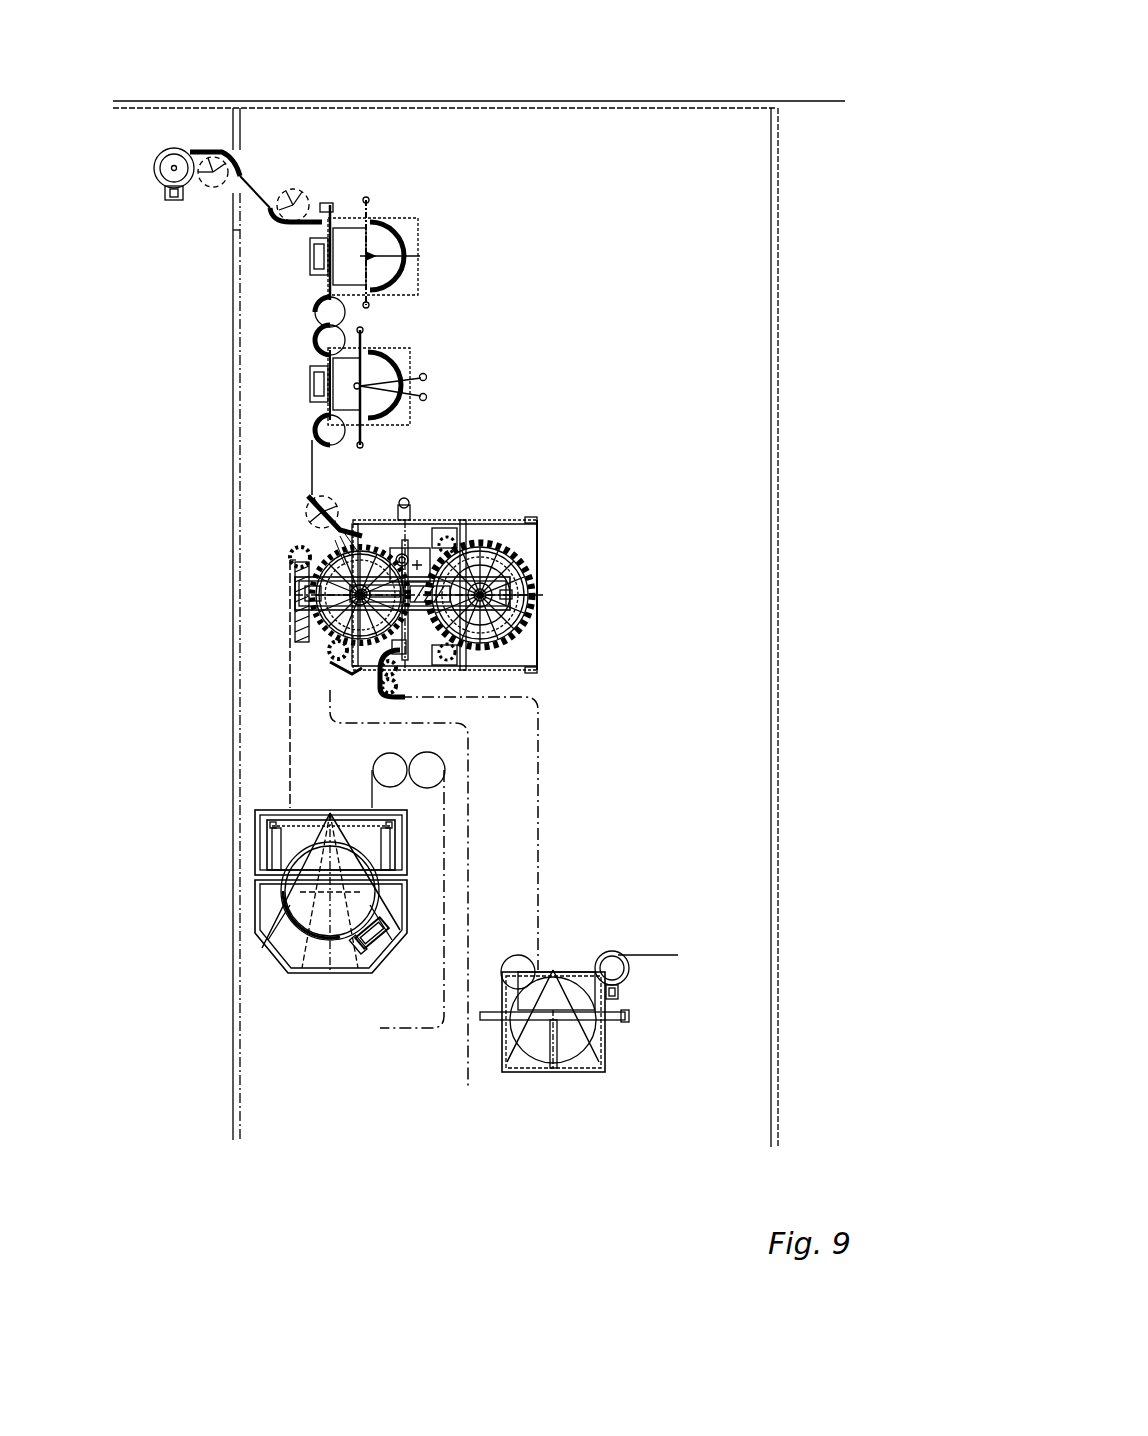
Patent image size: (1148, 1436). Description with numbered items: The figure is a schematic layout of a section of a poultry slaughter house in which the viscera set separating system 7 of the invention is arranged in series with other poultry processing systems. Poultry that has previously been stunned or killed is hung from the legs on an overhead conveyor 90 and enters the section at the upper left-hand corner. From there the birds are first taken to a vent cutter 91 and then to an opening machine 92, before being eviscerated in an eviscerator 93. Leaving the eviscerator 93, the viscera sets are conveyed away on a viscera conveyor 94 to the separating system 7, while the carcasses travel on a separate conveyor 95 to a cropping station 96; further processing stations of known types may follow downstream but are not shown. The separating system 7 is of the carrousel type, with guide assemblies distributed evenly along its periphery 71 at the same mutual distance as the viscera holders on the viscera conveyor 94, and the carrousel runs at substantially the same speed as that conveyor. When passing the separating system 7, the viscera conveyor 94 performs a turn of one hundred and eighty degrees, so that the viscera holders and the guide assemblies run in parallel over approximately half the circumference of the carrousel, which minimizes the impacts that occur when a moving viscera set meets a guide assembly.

The overhead conveyor 90 is at (252, 184).
The vent cutter 91 is at (427, 227).
The opening machine 92 is at (440, 388).
The eviscerator 93 is at (554, 624).
The viscera conveyor 94 is at (292, 744).
The carcass conveyor 95 is at (542, 828).
The viscera set separating system 7 is at (250, 898).
The periphery 71 is at (278, 938).
The cropping station 96 is at (633, 1027).